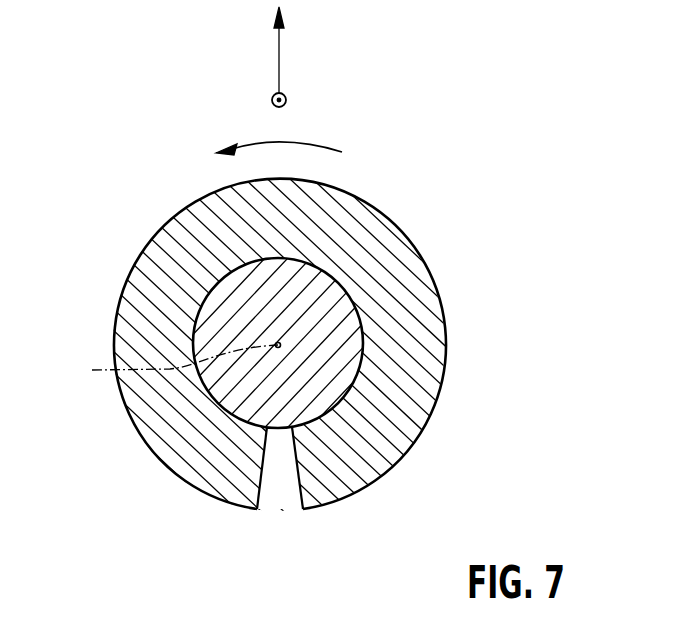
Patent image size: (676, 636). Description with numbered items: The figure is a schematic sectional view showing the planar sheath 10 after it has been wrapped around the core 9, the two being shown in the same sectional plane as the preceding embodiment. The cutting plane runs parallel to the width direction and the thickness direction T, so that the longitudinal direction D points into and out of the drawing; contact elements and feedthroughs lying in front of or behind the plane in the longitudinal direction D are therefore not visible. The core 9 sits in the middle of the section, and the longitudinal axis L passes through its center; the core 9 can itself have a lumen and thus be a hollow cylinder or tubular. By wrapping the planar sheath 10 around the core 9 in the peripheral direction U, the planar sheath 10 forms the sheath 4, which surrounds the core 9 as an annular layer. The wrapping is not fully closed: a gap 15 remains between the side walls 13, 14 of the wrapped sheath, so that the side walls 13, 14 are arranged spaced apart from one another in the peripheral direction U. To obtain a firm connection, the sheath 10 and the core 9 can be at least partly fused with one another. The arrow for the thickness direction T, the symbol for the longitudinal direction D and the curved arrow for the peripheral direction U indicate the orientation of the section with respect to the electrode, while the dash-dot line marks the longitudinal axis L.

The sheath 4 is at (338, 345).
The planar sheath 10 is at (145, 245).
The core 9 is at (363, 345).
The side wall 13 is at (265, 490).
The side wall 14 is at (293, 490).
The gap 15 is at (278, 505).
The longitudinal axis L is at (179, 363).
The thickness direction T is at (270, 47).
The longitudinal direction D is at (289, 102).
The peripheral direction U is at (279, 158).